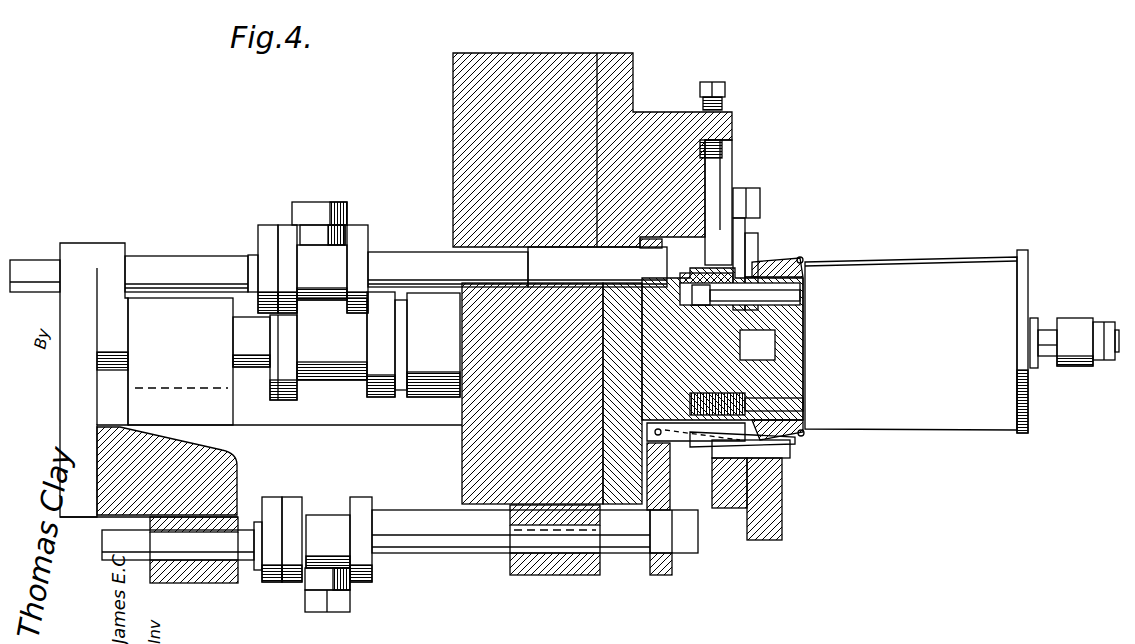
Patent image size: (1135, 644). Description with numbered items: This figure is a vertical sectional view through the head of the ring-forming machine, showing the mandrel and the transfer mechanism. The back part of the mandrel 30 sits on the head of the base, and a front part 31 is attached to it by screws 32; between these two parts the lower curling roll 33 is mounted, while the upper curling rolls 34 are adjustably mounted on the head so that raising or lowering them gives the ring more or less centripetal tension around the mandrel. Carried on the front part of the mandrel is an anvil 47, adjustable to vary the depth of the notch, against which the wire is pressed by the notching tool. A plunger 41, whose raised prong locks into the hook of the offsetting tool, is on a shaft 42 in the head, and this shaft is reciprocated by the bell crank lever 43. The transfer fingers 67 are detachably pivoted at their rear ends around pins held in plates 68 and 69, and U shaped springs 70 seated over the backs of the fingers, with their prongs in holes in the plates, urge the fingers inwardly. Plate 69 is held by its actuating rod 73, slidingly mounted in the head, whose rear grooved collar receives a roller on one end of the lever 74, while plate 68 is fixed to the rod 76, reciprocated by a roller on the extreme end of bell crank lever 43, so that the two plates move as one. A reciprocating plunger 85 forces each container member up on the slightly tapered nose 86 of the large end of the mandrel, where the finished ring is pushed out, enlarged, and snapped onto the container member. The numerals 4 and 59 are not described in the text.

The drum 4 is at (924, 260).
The mandrel 30 is at (722, 344).
The front part of the mandrel 31 is at (800, 257).
The screws 32 is at (805, 395).
The lower curling roll 33 is at (760, 270).
The upper curling rolls 34 is at (745, 232).
The plunger 41 is at (445, 346).
The shaft 42 is at (342, 374).
The bell crank lever 43 is at (316, 212).
The anvil 47 is at (800, 318).
The bracket 59 is at (772, 484).
The fingers 67 is at (768, 438).
The plate 68 is at (666, 236).
The plate 69 is at (658, 565).
The U shaped springs 70 is at (685, 443).
The actuating rod 73 is at (453, 552).
The lever 74 is at (322, 606).
The rod 76 is at (411, 262).
The reciprocating plunger 85 is at (1020, 302).
The tapered nose 86 is at (808, 428).